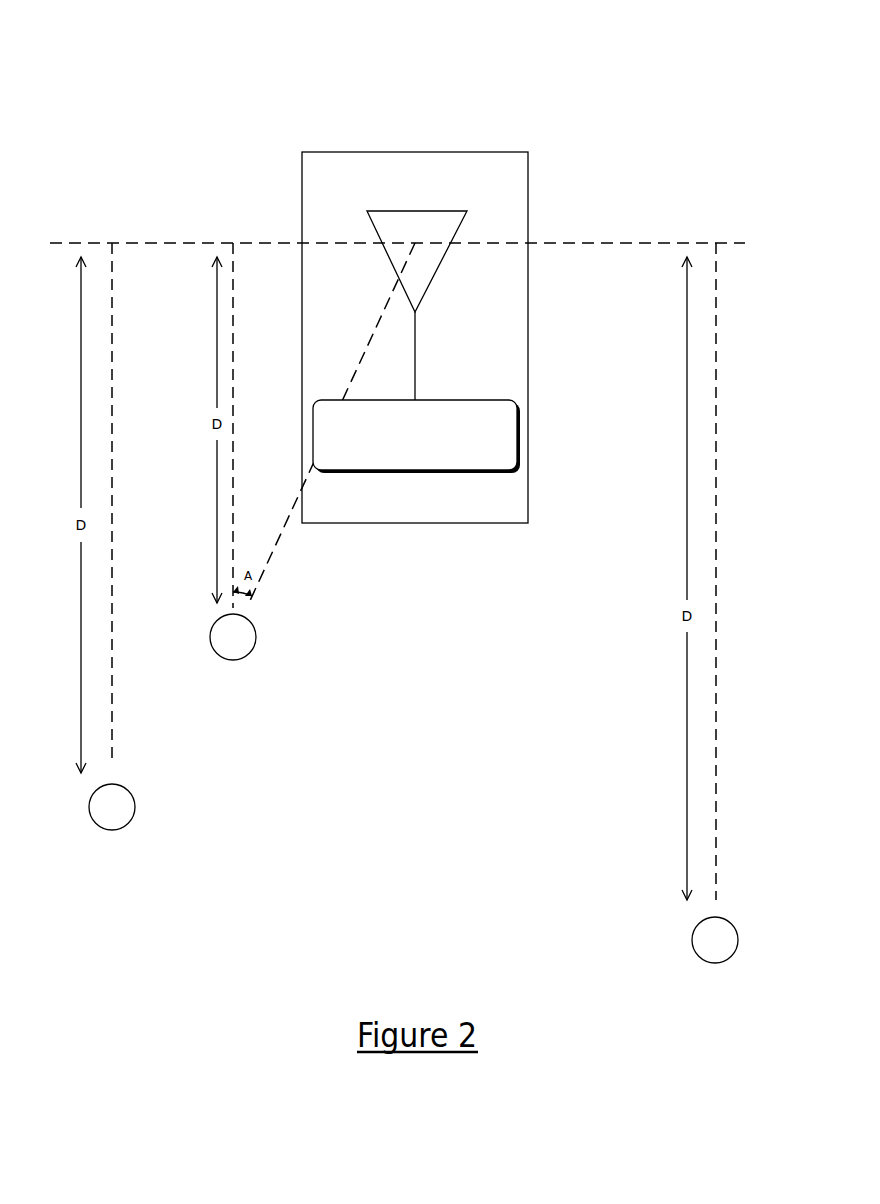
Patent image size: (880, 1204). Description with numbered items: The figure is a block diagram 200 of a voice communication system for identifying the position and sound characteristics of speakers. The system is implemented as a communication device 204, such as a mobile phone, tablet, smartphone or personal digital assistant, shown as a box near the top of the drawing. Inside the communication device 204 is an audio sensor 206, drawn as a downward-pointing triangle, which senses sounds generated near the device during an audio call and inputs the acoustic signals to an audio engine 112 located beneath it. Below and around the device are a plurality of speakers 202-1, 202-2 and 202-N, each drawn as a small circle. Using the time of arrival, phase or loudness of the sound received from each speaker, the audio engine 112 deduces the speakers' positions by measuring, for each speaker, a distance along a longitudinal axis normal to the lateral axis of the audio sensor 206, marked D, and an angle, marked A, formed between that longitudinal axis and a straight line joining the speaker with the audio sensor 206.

The block diagram 200 is at (416, 66).
The communication device 204 is at (402, 196).
The audio sensor 206 is at (402, 233).
The audio engine 112 is at (496, 451).
The speaker 202-1 is at (112, 807).
The speaker 202-2 is at (233, 637).
The speaker 202-N is at (715, 940).